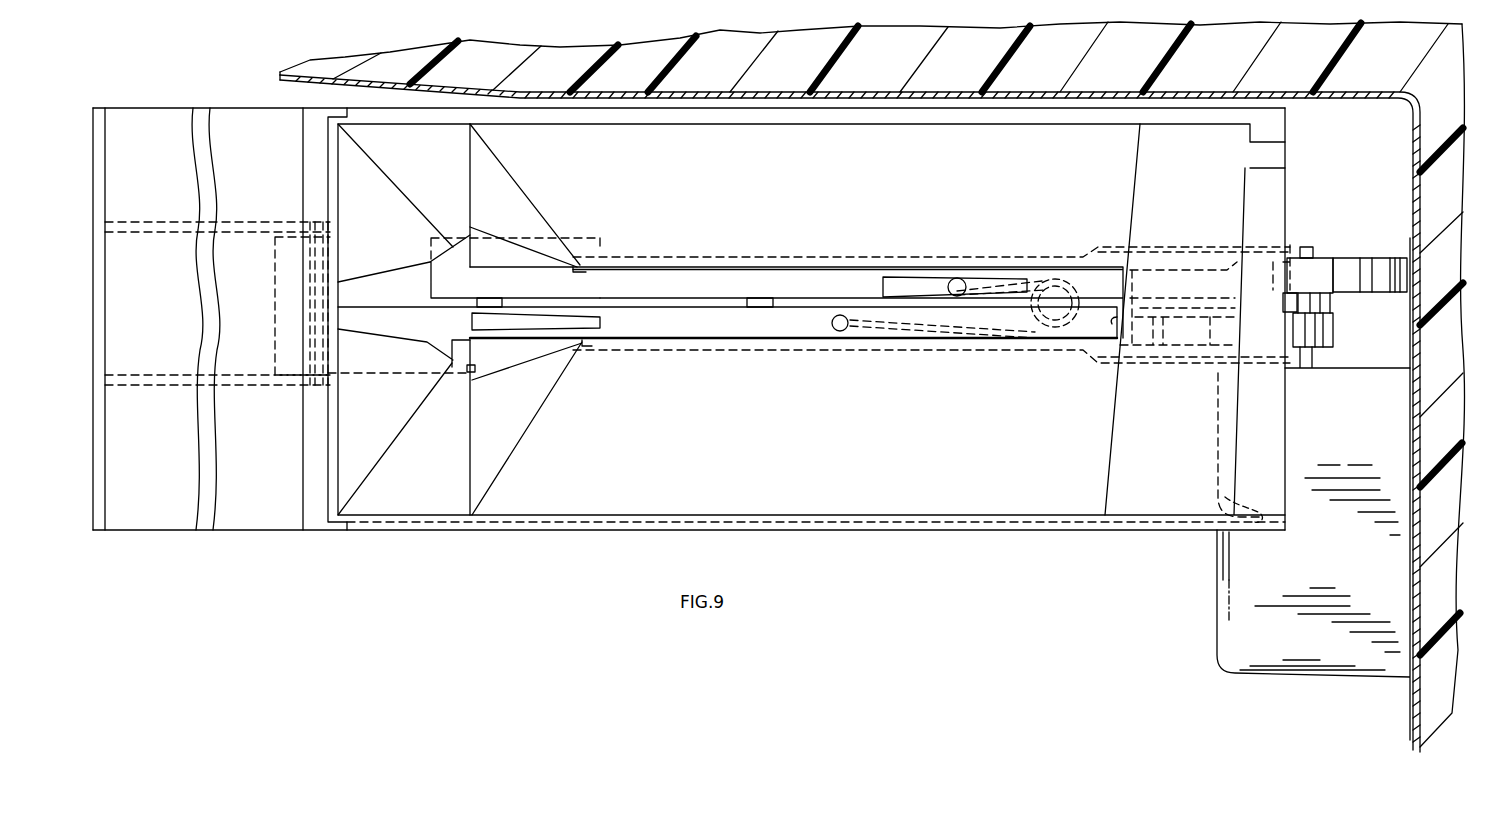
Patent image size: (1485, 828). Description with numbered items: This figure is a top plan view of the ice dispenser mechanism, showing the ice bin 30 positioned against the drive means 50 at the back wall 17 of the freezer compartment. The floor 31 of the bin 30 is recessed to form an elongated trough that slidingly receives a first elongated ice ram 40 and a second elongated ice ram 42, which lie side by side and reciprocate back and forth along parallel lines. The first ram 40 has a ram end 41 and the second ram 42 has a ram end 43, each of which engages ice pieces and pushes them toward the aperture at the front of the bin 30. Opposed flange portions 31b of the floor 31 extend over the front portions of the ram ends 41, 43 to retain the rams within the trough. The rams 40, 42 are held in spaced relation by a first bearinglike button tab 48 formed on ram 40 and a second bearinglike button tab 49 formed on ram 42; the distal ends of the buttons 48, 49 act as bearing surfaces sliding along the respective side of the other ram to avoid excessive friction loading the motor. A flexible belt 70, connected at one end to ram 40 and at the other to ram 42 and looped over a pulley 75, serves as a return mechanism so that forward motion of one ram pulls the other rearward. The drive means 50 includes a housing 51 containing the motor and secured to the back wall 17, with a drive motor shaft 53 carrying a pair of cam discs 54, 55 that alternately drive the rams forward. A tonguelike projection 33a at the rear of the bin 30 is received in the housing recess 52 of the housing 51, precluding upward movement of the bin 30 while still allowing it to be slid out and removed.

The back wall 17 is at (1418, 170).
The bin 30 is at (576, 552).
The floor 31 is at (847, 148).
The flange portions 31b is at (497, 253).
The tonguelike projection 33a is at (1241, 577).
The first elongated ice ram 40 is at (688, 332).
The ram end 41 is at (312, 338).
The second elongated ice ram 42 is at (752, 287).
The ram end 43 is at (427, 279).
The first bearinglike button tab 48 is at (502, 303).
The second bearinglike button tab 49 is at (765, 305).
The drive means 50 is at (1310, 686).
The housing 51 is at (1216, 618).
The housing recess 52 is at (1254, 520).
The drive motor shaft 53 is at (1303, 355).
The cam disc 54 is at (1375, 262).
The cam disc 55 is at (1323, 337).
The flexible belt 70 is at (934, 330).
The pulley 75 is at (1047, 284).